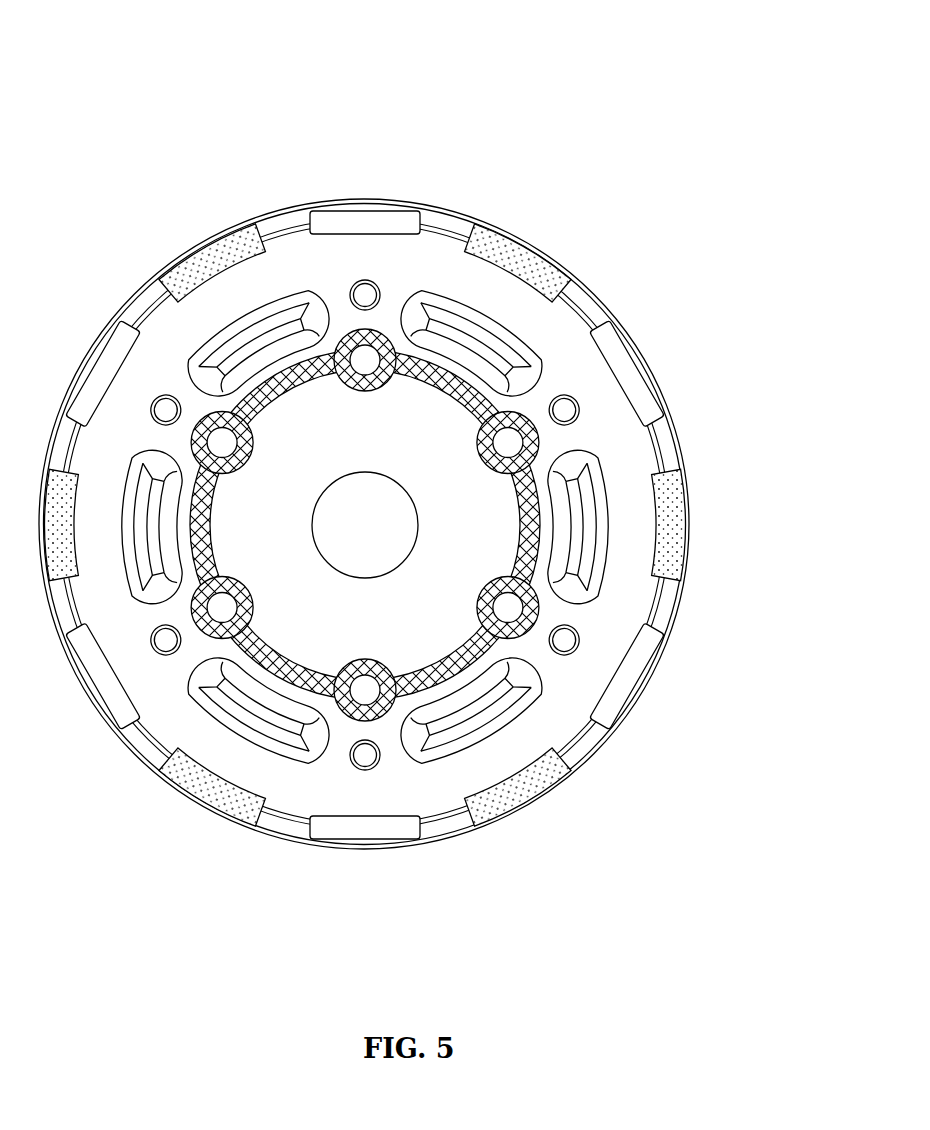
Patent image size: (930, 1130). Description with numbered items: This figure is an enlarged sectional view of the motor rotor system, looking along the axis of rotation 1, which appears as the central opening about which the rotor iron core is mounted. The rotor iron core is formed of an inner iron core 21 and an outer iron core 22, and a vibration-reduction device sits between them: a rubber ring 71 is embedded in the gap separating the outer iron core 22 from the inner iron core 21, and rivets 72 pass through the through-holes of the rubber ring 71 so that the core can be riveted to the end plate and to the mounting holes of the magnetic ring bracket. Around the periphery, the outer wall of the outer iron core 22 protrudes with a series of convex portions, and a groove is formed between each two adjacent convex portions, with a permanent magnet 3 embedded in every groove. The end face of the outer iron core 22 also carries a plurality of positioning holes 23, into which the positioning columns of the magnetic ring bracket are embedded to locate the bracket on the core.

The axis of rotation 1 is at (358, 541).
The permanent magnet 3 is at (248, 223).
The inner iron core 21 is at (510, 528).
The outer iron core 22 is at (562, 332).
The positioning holes 23 is at (165, 650).
The rubber ring 71 is at (384, 323).
The rivet 72 is at (221, 441).